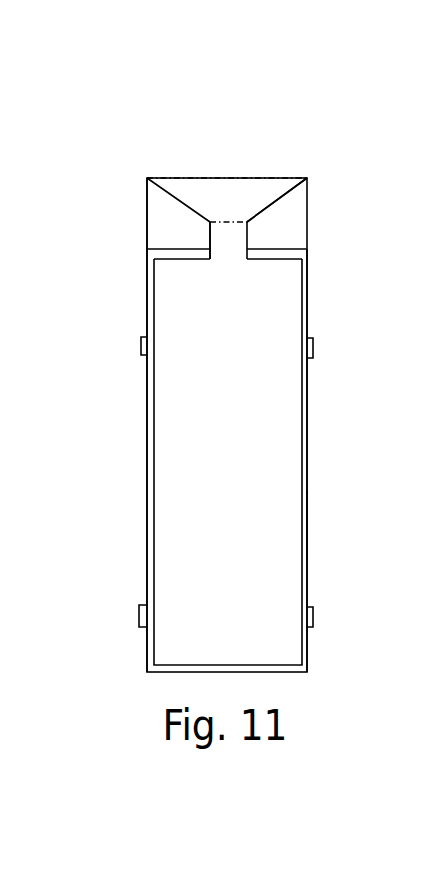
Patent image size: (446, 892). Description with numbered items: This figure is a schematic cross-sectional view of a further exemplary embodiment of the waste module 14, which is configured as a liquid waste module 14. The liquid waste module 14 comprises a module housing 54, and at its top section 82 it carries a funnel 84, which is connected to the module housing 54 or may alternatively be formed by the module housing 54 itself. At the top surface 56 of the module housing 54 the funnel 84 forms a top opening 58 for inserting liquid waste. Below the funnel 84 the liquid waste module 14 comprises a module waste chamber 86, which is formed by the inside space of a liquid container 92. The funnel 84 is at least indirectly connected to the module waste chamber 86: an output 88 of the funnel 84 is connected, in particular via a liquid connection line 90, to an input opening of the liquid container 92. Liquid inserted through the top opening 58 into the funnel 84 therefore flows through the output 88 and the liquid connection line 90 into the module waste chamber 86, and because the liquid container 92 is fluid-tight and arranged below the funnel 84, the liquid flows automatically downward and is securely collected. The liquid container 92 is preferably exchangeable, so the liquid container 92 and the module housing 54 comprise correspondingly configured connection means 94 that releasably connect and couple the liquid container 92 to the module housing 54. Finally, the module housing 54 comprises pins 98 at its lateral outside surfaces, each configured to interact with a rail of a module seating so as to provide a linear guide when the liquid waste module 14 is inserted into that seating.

The liquid waste module 14 is at (349, 136).
The module housing 54 is at (313, 253).
The top surface 56 is at (242, 146).
The top opening 58 is at (262, 183).
The top section 82 is at (340, 200).
The funnel 84 is at (158, 205).
The module waste chamber 86 is at (280, 315).
The output 88 is at (225, 218).
The liquid connection line 90 is at (206, 232).
The liquid container 92 is at (307, 487).
The connection means 94 is at (305, 545).
The pins 98 is at (138, 345).